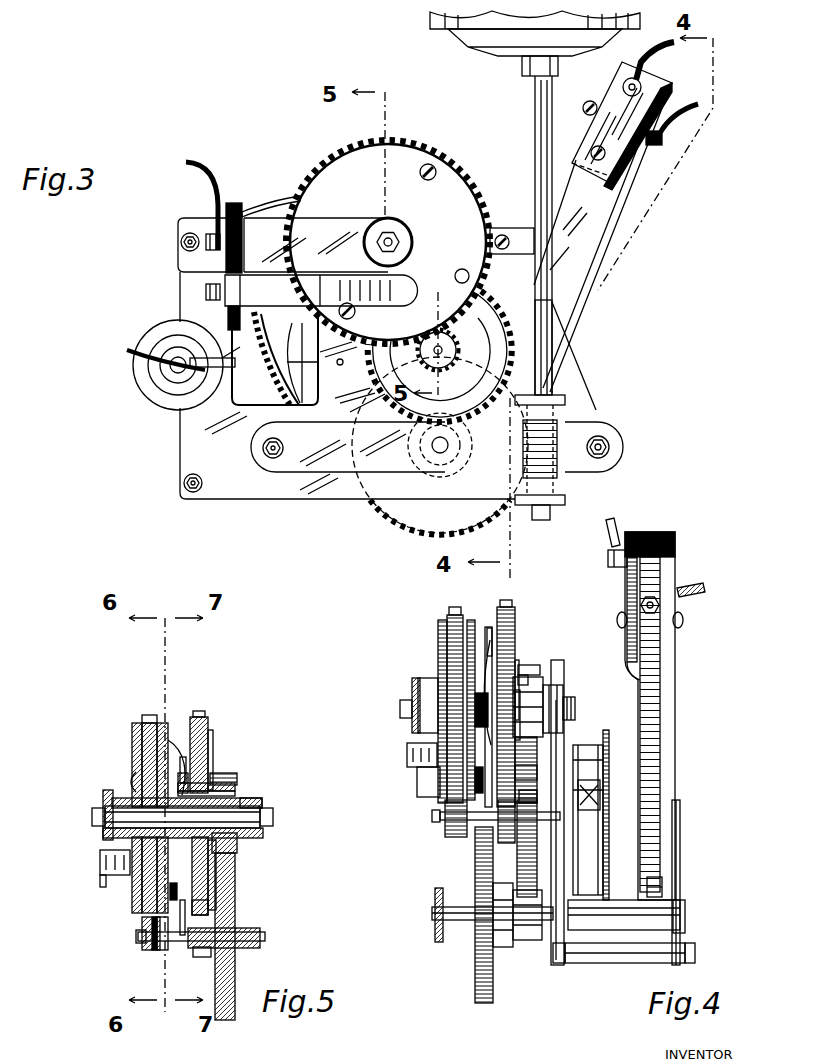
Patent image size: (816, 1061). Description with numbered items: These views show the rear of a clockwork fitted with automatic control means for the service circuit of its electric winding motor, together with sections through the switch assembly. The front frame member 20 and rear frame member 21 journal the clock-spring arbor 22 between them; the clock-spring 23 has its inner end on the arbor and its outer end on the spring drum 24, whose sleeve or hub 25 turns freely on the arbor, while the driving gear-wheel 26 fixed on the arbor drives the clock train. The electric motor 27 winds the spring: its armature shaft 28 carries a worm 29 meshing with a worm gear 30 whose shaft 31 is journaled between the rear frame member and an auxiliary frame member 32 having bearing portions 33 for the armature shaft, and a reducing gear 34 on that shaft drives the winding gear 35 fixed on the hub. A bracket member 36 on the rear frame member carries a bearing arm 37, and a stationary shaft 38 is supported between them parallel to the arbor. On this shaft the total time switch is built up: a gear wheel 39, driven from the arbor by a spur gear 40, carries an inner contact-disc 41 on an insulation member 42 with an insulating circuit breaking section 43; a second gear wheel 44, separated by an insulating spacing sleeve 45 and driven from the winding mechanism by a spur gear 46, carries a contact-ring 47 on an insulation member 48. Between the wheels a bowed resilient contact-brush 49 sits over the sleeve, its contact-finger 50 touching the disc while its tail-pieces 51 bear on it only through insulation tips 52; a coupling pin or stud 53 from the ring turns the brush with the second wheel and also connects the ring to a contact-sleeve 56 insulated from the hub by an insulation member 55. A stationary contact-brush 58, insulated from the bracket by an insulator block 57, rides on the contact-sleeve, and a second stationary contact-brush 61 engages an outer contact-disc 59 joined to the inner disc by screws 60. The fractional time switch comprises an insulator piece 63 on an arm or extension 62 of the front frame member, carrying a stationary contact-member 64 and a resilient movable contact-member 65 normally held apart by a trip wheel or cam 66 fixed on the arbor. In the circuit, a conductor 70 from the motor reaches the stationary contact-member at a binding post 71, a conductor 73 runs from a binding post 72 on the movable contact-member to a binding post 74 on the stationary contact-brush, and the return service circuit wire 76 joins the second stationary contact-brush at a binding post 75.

In FIG. 4, the front frame member 20 is at (680, 866).
In FIG. 3, the rear frame member 21 is at (180, 458).
In FIG. 5, the rear frame member 21 is at (262, 833).
In FIG. 4, the rear frame member 21 is at (566, 862).
In FIG. 3, the clock-spring arbor 22 is at (452, 350).
In FIG. 5, the clock-spring arbor 22 is at (136, 936).
In FIG. 4, the clock-spring arbor 22 is at (432, 817).
In FIG. 4, the clock-spring 23 is at (600, 800).
In FIG. 4, the spring drum 24 is at (588, 745).
In FIG. 5, the sleeve or hub 25 is at (260, 930).
In FIG. 4, the sleeve or hub 25 is at (544, 792).
In FIG. 3, the main or driving gear-wheel 26 is at (535, 370).
In FIG. 4, the main or driving gear-wheel 26 is at (606, 730).
In FIG. 3, the electric motor 27 is at (455, 40).
In FIG. 3, the armature shaft 28 is at (534, 122).
In FIG. 3, the worm 29 is at (572, 476).
In FIG. 3, the worm gear 30 is at (410, 530).
In FIG. 4, the worm gear 30 is at (478, 980).
In FIG. 3, the worm gear shaft 31 is at (462, 445).
In FIG. 4, the worm gear shaft 31 is at (458, 921).
In FIG. 3, the auxiliary frame member 32 is at (294, 474).
In FIG. 3, the bearing portions 33 is at (568, 398).
In FIG. 3, the reducing gear 34 is at (408, 444).
In FIG. 4, the reducing gear 34 is at (520, 947).
In FIG. 3, the winding gear 35 is at (553, 308).
In FIG. 5, the winding gear 35 is at (236, 972).
In FIG. 4, the winding gear 35 is at (518, 868).
In FIG. 3, the bracket member 36 is at (180, 220).
In FIG. 3, the bearing arm 37 is at (343, 218).
In FIG. 5, the bearing arm 37 is at (104, 798).
In FIG. 4, the bearing arm 37 is at (412, 690).
In FIG. 5, the stationary shaft 38 is at (248, 802).
In FIG. 4, the stationary shaft 38 is at (435, 893).
In FIG. 3, the gear wheel 39 is at (432, 150).
In FIG. 5, the gear wheel 39 is at (142, 714).
In FIG. 4, the gear wheel 39 is at (452, 606).
In FIG. 3, the spur gear 40 is at (447, 342).
In FIG. 5, the spur gear 40 is at (145, 952).
In FIG. 4, the spur gear 40 is at (450, 838).
In FIG. 5, the contact-disc 41 is at (186, 935).
In FIG. 4, the contact-disc 41 is at (489, 626).
In FIG. 5, the insulation member 42 is at (162, 950).
In FIG. 4, the insulation member 42 is at (472, 618).
In FIG. 5, the neutral or circuit breaking section 43 is at (170, 740).
In FIG. 5, the second gear wheel 44 is at (208, 720).
In FIG. 4, the second gear wheel 44 is at (512, 612).
In FIG. 5, the spacing sleeve 45 is at (235, 783).
In FIG. 5, the spur gear 46 is at (204, 958).
In FIG. 4, the spur gear 46 is at (505, 844).
In FIG. 5, the contact-ring 47 is at (216, 870).
In FIG. 4, the contact-ring 47 is at (520, 690).
In FIG. 5, the insulation member 48 is at (186, 772).
In FIG. 4, the insulation member 48 is at (517, 660).
In FIG. 5, the contact-brush 49 is at (182, 817).
In FIG. 4, the contact-brush 49 is at (522, 675).
In FIG. 5, the contact-finger 50 is at (184, 756).
In FIG. 4, the contact-finger 50 is at (490, 628).
In FIG. 5, the tail-pieces 51 is at (178, 892).
In FIG. 4, the tail-pieces 51 is at (546, 752).
In FIG. 5, the insulation material 52 is at (208, 905).
In FIG. 4, the insulation material 52 is at (546, 772).
In FIG. 5, the coupling pin or stud 53 is at (236, 792).
In FIG. 4, the coupling pin or stud 53 is at (524, 666).
In FIG. 5, the insulation member 55 is at (213, 733).
In FIG. 4, the insulation member 55 is at (548, 682).
In FIG. 5, the contact-sleeve 56 is at (237, 845).
In FIG. 4, the contact-sleeve 56 is at (525, 695).
In FIG. 3, the insulator block 57 is at (234, 202).
In FIG. 3, the stationary contact-brush 58 is at (270, 199).
In FIG. 5, the stationary contact-brush 58 is at (237, 775).
In FIG. 4, the stationary contact-brush 58 is at (548, 690).
In FIG. 3, the outer contact-disc 59 is at (460, 197).
In FIG. 5, the outer contact-disc 59 is at (132, 740).
In FIG. 4, the outer contact-disc 59 is at (438, 630).
In FIG. 3, the screws 60 is at (421, 175).
In FIG. 5, the screws 60 is at (130, 772).
In FIG. 3, the second stationary contact-brush 61 is at (396, 305).
In FIG. 5, the second stationary contact-brush 61 is at (100, 862).
In FIG. 4, the second stationary contact-brush 61 is at (408, 755).
In FIG. 4, the arm or extension 62 is at (676, 672).
In FIG. 3, the insulator piece 63 is at (628, 162).
In FIG. 4, the insulator piece 63 is at (650, 531).
In FIG. 3, the stationary contact-member 64 is at (580, 152).
In FIG. 4, the stationary contact-member 64 is at (627, 658).
In FIG. 3, the movable contact-member 65 is at (618, 226).
In FIG. 4, the movable contact-member 65 is at (655, 716).
In FIG. 4, the trip wheel or cam 66 is at (662, 885).
In FIG. 3, the conductor 70 is at (662, 56).
In FIG. 4, the conductor 70 is at (606, 540).
In FIG. 3, the binding post 71 is at (642, 86).
In FIG. 4, the binding post 71 is at (608, 560).
In FIG. 3, the binding post 72 is at (662, 138).
In FIG. 4, the binding post 72 is at (658, 600).
In FIG. 3, the conductor 73 is at (184, 167).
In FIG. 4, the conductor 73 is at (704, 590).
In FIG. 3, the binding post 74 is at (212, 233).
In FIG. 3, the binding post 75 is at (206, 290).
In FIG. 3, the return service circuit wire 76 is at (128, 348).